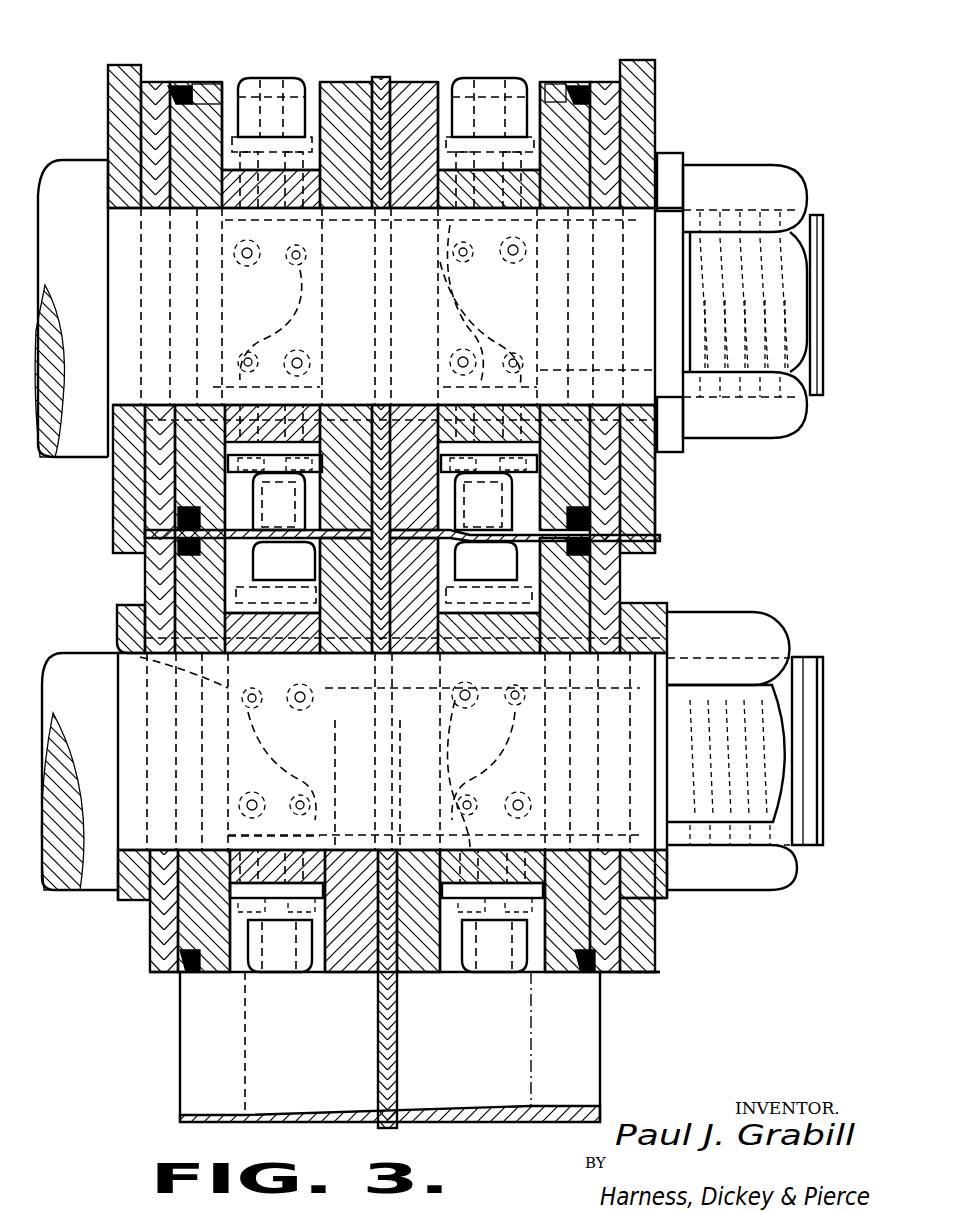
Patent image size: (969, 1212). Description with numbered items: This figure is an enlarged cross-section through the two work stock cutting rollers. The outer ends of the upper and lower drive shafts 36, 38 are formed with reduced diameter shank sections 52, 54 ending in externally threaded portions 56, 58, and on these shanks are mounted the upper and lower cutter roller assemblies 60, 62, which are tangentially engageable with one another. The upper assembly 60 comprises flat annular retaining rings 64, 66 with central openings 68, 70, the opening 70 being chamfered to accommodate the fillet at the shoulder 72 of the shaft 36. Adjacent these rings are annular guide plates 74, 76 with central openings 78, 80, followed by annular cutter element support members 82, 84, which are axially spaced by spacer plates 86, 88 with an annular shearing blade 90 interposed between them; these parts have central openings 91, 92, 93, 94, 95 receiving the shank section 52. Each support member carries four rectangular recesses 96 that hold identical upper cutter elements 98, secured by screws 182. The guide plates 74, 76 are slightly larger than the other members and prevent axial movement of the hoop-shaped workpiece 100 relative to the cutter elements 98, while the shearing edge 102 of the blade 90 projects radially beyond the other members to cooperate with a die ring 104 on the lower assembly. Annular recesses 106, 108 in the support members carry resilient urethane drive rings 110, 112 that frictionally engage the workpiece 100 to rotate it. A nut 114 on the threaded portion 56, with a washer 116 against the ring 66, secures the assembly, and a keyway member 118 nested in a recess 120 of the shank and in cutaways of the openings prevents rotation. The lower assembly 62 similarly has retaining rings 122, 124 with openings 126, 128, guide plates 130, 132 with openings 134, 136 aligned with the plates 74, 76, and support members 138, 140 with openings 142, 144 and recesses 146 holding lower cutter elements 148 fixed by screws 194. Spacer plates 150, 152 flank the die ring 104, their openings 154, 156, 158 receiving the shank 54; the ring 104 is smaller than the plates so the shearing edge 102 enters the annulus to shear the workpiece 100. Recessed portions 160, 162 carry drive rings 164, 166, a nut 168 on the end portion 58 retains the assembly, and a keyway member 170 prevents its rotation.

The drive shaft 36 is at (826, 255).
The drive shaft 38 is at (822, 848).
The shank section 52 is at (112, 390).
The shank section 54 is at (118, 707).
The externally threaded portion 56 is at (812, 212).
The externally threaded portion 58 is at (808, 642).
The cutter roller assembly 60 is at (668, 128).
The cutter roller assembly 62 is at (648, 935).
The retaining ring 64 is at (106, 97).
The retaining ring 66 is at (655, 66).
The central opening 68 is at (683, 205).
The central opening 70 is at (118, 205).
The shoulder 72 is at (118, 258).
The guide plate 74 is at (113, 493).
The guide plate 76 is at (655, 497).
The central opening 78 is at (175, 322).
The central opening 80 is at (625, 372).
The cutter element support member 82 is at (215, 82).
The cutter element support member 84 is at (562, 82).
The spacer plate 86 is at (348, 82).
The spacer plate 88 is at (415, 82).
The shearing blade 90 is at (390, 120).
The central annular opening 91 is at (336, 215).
The central annular opening 92 is at (392, 212).
The central annular opening 93 is at (405, 215).
The central annular opening 94 is at (213, 210).
The central annular opening 95 is at (562, 212).
The cutter element support recess 96 is at (310, 165).
The upper cutter element 98 is at (300, 78).
The workpiece 100 is at (545, 560).
The shearing edge 102 is at (381, 77).
The die ring 104 is at (333, 975).
The annular recess 106 is at (202, 82).
The annular recess 108 is at (580, 85).
The drive ring 110 is at (180, 85).
The drive ring 112 is at (558, 84).
The nut 114 is at (748, 165).
The washer 116 is at (690, 432).
The keyway member 118 is at (665, 455).
The recess 120 is at (598, 325).
The retaining ring 122 is at (128, 905).
The retaining ring 124 is at (660, 905).
The central opening 126 is at (117, 630).
The central opening 128 is at (218, 566).
The guide plate 130 is at (155, 975).
The guide plate 132 is at (648, 978).
The central opening 134 is at (170, 848).
The central opening 136 is at (605, 848).
The cutter element support member 138 is at (218, 975).
The cutter element support member 140 is at (548, 975).
The central opening 142 is at (235, 848).
The central opening 144 is at (550, 848).
The cutter element support recess 146 is at (178, 620).
The lower cutter element 148 is at (537, 462).
The spacer plate 150 is at (378, 1020).
The spacer plate 152 is at (440, 975).
The opening 154 is at (333, 848).
The opening 156 is at (393, 848).
The opening 158 is at (445, 848).
The annular recessed portion 160 is at (186, 975).
The annular recessed portion 162 is at (640, 975).
The drive ring 164 is at (198, 975).
The drive ring 166 is at (585, 975).
The nut 168 is at (780, 893).
The keyway member 170 is at (668, 705).
The screws 182 is at (290, 262).
The screws 194 is at (317, 580).